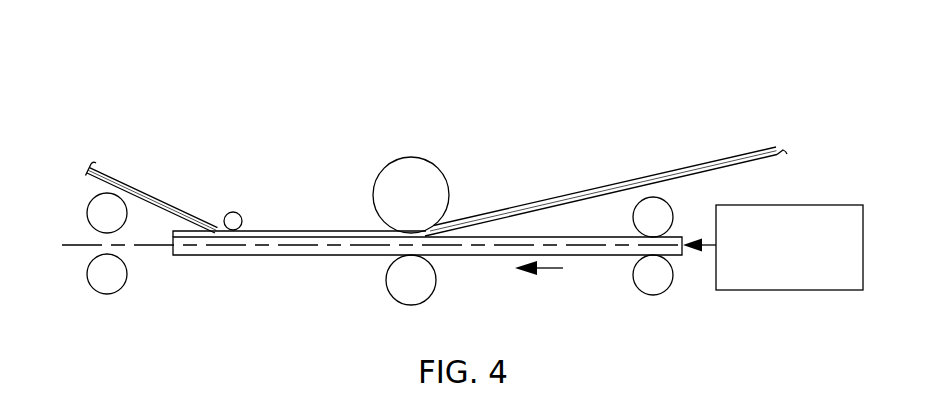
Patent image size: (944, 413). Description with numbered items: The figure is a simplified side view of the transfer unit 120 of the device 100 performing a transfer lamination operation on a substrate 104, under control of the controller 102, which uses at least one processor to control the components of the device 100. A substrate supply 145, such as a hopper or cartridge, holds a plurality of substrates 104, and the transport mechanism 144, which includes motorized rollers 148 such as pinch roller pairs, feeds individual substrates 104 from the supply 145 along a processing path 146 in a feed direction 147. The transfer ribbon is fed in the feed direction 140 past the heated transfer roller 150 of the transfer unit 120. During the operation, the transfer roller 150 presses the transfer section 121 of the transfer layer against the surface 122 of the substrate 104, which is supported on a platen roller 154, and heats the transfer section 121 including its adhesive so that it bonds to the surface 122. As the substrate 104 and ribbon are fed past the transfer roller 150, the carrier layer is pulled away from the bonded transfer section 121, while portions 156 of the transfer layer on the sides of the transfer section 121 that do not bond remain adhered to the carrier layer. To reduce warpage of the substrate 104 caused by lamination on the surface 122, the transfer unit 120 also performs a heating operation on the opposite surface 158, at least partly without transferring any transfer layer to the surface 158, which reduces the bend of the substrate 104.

The device 100 is at (712, 160).
The controller 102 is at (558, 206).
The substrate 104 is at (105, 165).
The transfer unit 120 is at (168, 61).
The transfer section 121 is at (193, 238).
The surface 122 is at (522, 219).
The feed direction 140 is at (648, 163).
The transport mechanism 144 is at (711, 336).
The substrate supply 145 is at (793, 205).
The processing path 146 is at (80, 244).
The feed direction 147 is at (547, 268).
The motorized rollers 148 is at (107, 290).
The heated transfer roller 150 is at (412, 158).
The platen roller 154 is at (420, 289).
The portions 156 is at (203, 219).
The surface 158 is at (492, 277).